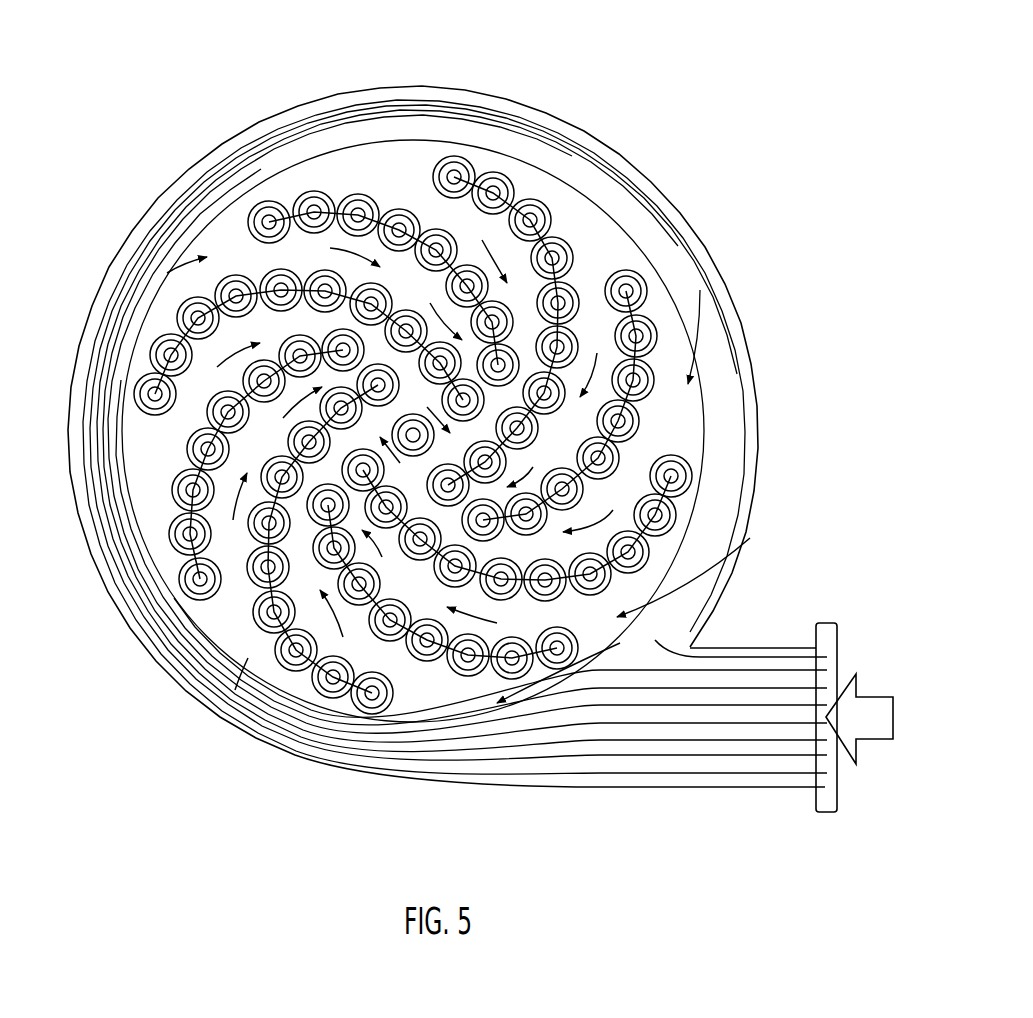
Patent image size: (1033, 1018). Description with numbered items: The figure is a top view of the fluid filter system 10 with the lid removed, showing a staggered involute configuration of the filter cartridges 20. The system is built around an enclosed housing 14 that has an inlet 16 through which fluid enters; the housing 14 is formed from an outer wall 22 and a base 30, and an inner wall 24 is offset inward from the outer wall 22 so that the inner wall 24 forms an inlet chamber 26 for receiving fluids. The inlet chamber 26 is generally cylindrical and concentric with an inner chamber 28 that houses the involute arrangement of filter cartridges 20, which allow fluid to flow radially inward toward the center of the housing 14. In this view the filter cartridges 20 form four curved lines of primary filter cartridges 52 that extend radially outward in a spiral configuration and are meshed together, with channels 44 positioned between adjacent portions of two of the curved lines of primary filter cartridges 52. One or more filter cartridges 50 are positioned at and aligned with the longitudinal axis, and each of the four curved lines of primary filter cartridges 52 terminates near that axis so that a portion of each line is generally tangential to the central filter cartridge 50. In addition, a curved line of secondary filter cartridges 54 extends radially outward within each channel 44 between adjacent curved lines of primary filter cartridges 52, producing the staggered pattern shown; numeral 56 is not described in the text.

The fluid filter system 10 is at (702, 88).
The housing 14 is at (396, 84).
The inlet 16 is at (836, 674).
The filter cartridges 20 is at (373, 162).
The outer wall 22 is at (338, 100).
The inner wall 24 is at (290, 198).
The inlet chamber 26 is at (428, 100).
The inner chamber 28 is at (605, 243).
The base 30 is at (690, 318).
The channels 44 is at (630, 470).
The filter cartridge 50 is at (652, 300).
The curved lines of primary filter cartridges 52 is at (518, 198).
The curved line of secondary filter cartridges 54 is at (316, 207).
The tube 56 is at (176, 534).